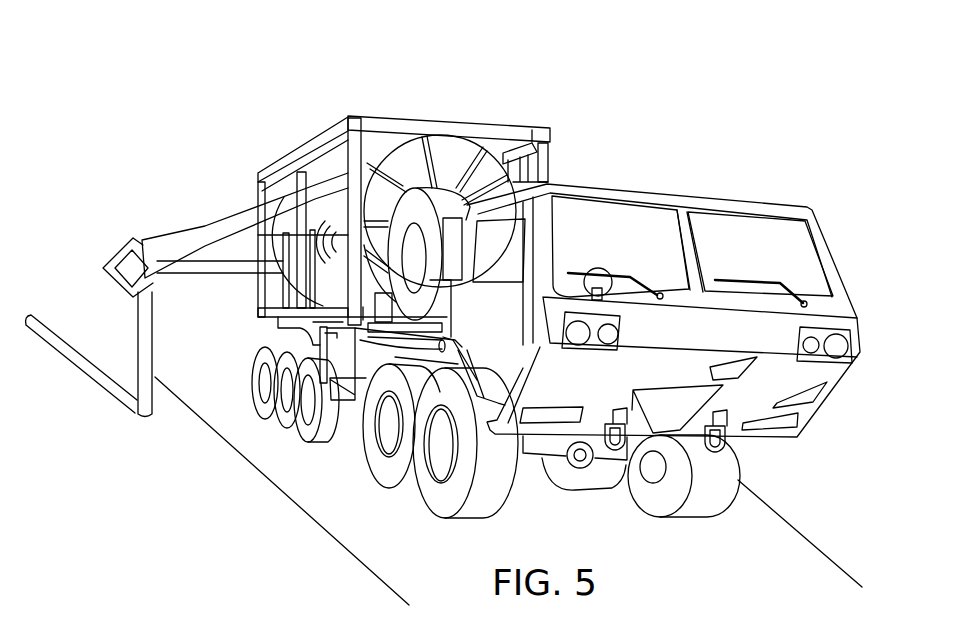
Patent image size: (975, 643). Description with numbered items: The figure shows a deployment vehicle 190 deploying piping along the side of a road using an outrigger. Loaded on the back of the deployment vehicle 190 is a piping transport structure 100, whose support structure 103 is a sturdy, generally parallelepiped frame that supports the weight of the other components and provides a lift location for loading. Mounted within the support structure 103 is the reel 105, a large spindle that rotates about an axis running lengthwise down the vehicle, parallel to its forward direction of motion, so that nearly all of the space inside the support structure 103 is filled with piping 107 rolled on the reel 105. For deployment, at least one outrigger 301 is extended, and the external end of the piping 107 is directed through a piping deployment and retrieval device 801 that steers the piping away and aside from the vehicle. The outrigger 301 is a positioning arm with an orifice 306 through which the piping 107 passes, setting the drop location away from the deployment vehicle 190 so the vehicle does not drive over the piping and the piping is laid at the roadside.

The piping transport structure 100 is at (423, 73).
The support structure 103 is at (507, 125).
The reel 105 is at (452, 142).
The piping 107 is at (222, 216).
The deployment vehicle 190 is at (690, 196).
The outrigger 301 is at (108, 258).
The orifice 306 is at (143, 252).
The piping deployment and retrieval device 801 is at (298, 172).